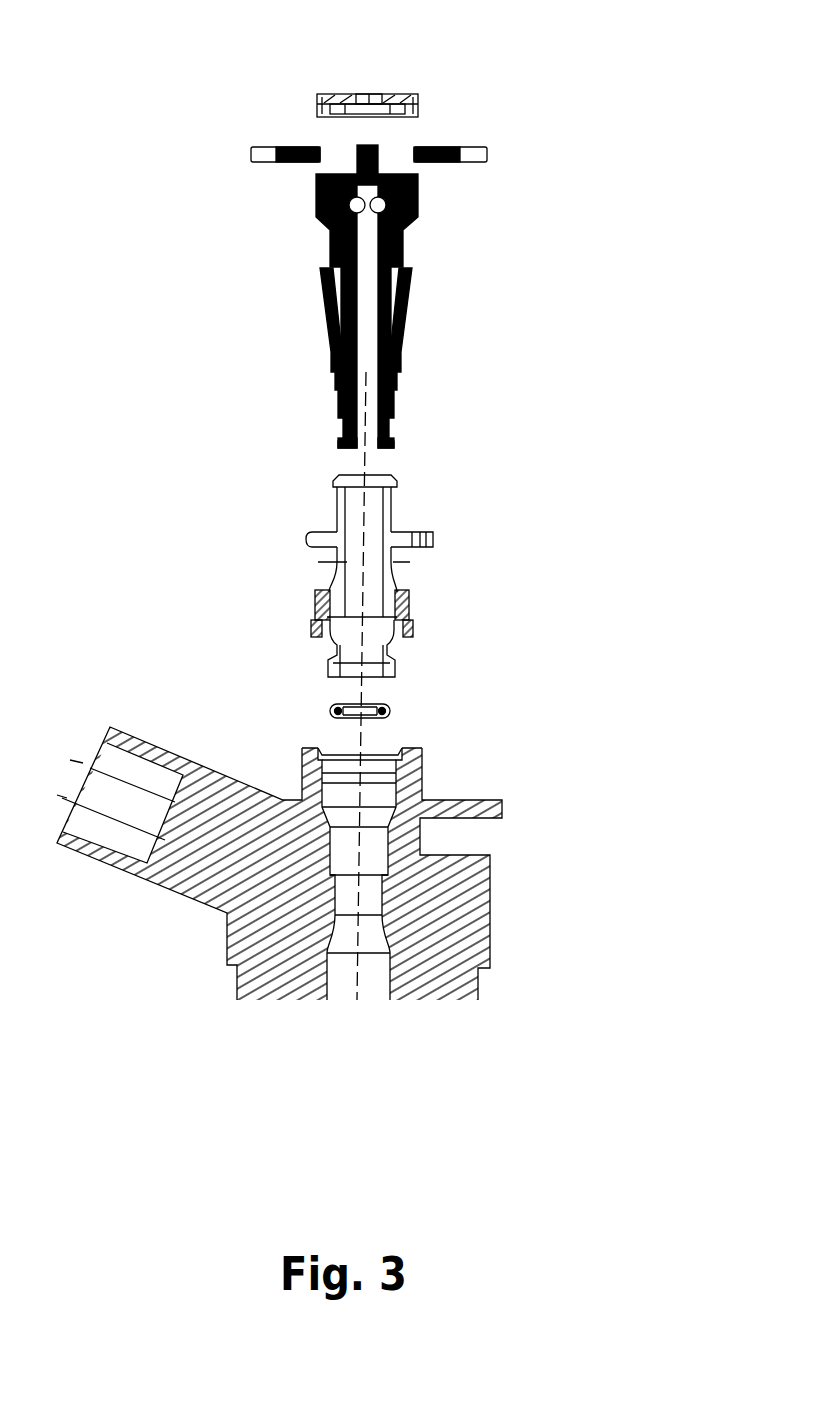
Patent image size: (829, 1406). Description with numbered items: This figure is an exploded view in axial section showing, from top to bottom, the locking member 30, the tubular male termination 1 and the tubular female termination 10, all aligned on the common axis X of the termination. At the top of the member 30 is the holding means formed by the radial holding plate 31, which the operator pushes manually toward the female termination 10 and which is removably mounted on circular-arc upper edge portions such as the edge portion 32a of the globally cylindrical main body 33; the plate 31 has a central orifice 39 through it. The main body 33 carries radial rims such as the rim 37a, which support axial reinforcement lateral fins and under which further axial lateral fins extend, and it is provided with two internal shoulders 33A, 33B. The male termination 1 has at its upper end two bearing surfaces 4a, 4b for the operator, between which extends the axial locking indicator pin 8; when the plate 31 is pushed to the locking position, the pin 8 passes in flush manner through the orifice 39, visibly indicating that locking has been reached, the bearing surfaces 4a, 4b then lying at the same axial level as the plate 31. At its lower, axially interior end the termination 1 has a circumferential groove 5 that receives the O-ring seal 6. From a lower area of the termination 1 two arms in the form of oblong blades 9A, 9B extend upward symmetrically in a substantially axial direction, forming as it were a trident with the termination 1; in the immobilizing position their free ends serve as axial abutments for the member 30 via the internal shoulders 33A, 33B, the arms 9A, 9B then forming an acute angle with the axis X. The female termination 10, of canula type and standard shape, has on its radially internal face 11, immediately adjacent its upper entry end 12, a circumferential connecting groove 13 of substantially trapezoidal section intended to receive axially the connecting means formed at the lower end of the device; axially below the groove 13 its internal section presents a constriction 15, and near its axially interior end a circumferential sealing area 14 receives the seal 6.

The tubular male termination 1 is at (337, 284).
The bearing surface 4a is at (293, 148).
The bearing surface 4b is at (450, 152).
The circumferential groove 5 is at (390, 426).
The O-ring seal 6 is at (392, 710).
The axial locking indicator pin 8 is at (379, 153).
The oblong blade arm 9A is at (320, 327).
The oblong blade arm 9B is at (410, 327).
The tubular female termination 10 is at (279, 847).
The radially internal face 11 is at (345, 851).
The entry end 12 is at (318, 758).
The circumferential connecting groove 13 is at (398, 773).
The circumferential sealing area 14 is at (382, 868).
The constriction 15 is at (394, 816).
The locking member 30 is at (343, 569).
The holding plate 31 is at (370, 63).
The upper edge portion 32a is at (343, 477).
The main body 33 is at (382, 635).
The internal shoulder 33A is at (318, 636).
The internal shoulder 33B is at (406, 636).
The radial rim 37a is at (434, 538).
The orifice 39 is at (370, 93).
The axis X is at (364, 463).